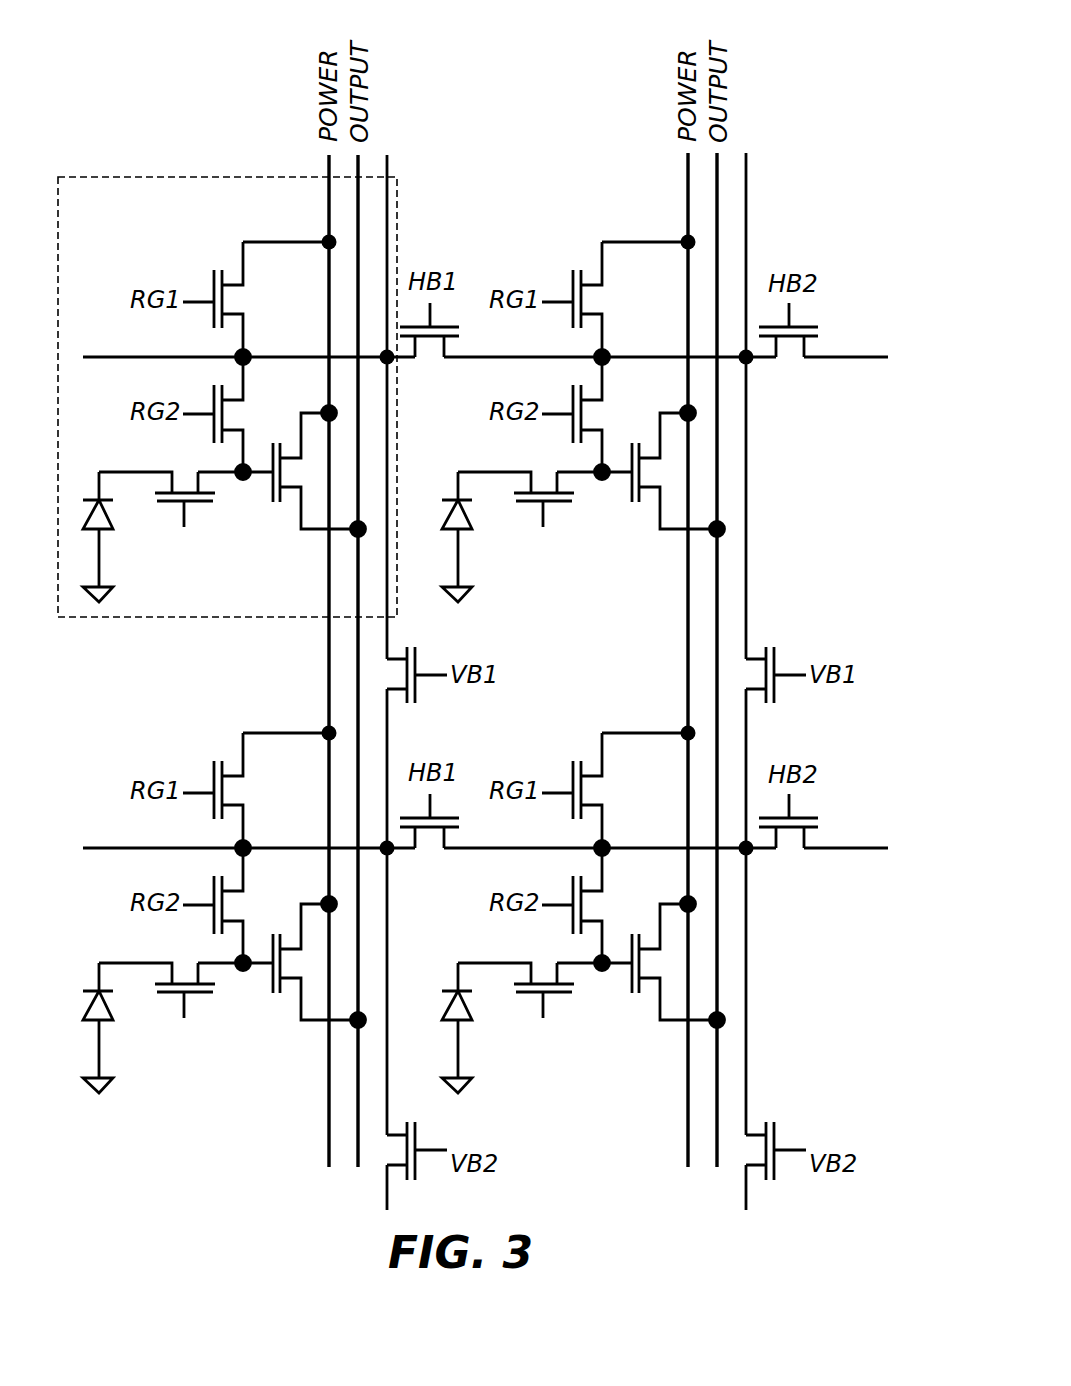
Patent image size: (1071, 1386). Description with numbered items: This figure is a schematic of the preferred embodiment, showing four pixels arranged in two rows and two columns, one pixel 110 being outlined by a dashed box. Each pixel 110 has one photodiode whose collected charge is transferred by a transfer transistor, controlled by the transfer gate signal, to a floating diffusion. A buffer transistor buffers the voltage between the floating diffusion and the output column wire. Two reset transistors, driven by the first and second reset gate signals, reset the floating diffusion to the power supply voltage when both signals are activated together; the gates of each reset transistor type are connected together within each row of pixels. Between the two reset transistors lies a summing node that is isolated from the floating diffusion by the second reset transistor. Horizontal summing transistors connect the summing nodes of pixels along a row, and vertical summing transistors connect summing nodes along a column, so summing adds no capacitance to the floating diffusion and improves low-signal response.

The pixel 110 is at (138, 177).